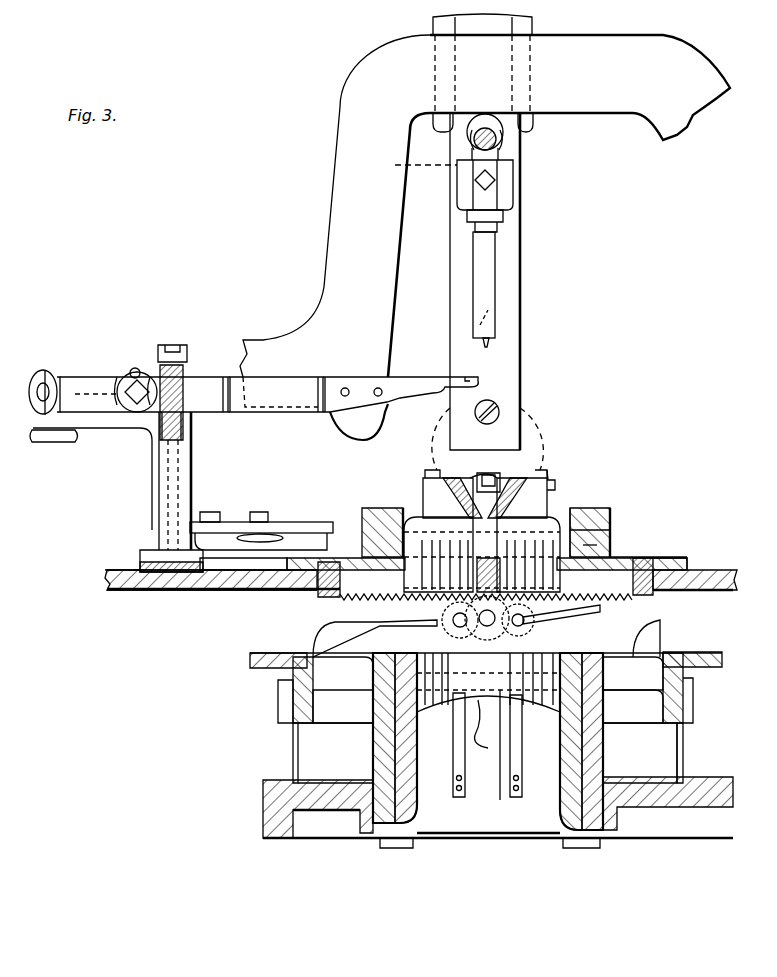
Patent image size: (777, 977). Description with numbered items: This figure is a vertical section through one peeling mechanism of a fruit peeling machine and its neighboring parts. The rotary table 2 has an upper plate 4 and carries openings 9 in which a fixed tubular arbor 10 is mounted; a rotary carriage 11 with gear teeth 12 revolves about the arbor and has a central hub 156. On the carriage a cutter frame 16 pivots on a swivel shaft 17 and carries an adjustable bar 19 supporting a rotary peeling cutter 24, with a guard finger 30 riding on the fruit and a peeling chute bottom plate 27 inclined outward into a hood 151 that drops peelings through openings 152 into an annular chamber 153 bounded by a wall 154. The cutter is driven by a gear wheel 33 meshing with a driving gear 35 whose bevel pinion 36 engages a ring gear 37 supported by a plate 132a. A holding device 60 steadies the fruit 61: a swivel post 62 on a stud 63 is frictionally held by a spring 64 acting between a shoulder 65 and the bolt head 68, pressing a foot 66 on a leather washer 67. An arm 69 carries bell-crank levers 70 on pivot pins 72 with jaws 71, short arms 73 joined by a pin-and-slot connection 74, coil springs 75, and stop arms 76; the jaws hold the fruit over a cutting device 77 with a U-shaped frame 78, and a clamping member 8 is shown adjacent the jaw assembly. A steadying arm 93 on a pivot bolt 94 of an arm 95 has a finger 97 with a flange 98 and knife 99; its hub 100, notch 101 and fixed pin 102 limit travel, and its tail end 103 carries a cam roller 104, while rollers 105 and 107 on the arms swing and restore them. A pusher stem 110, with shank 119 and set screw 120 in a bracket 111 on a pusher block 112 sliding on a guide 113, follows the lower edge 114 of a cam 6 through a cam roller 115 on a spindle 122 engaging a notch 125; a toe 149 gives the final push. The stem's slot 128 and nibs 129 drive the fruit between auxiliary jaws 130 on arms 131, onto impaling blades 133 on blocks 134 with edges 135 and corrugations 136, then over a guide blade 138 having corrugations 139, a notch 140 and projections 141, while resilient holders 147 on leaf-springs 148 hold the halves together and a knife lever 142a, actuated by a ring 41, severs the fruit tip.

The rotary table 2 is at (110, 586).
The upper plate 4 is at (138, 590).
The cam 6 is at (377, 64).
The clamping member 8 is at (559, 485).
The openings 9 is at (553, 815).
The tubular arbor 10 is at (562, 772).
The rotary carriage 11 is at (675, 655).
The gear teeth 12 is at (695, 695).
The cutter frame 16 is at (600, 625).
The swivel shaft 17 is at (607, 700).
The adjustable bar 19 is at (612, 558).
The rotary peeling cutter 24 is at (442, 608).
The bottom plate 27 is at (640, 612).
The guard finger 30 is at (590, 552).
The gear wheel 33 is at (600, 596).
The driving gear 35 is at (582, 532).
The bevel pinion 36 is at (335, 753).
The ring gear 37 is at (648, 565).
The ring 41 is at (722, 660).
The holding device 60 is at (294, 420).
The fruit 61 is at (540, 420).
The swivel post 62 is at (158, 488).
The central stud 63 is at (166, 500).
The spring 64 is at (190, 378).
The shoulder 65 is at (190, 447).
The foot 66 is at (142, 558).
The washer 67 is at (108, 576).
The head 68 is at (180, 350).
The arm 69 is at (300, 545).
The levers 70 is at (553, 473).
The jaws 71 is at (494, 458).
The pivot pins 72 is at (555, 480).
The short arms 73 is at (488, 473).
The pin-and-slot connection 74 is at (425, 512).
The coil spring 75 is at (578, 506).
The stop arms 76 is at (578, 510).
The cutting device 77 is at (612, 512).
The U-shaped frame 78 is at (612, 520).
The steadying arm 93 is at (277, 388).
The pivot bolt 94 is at (133, 406).
The arm 95 is at (96, 430).
The finger 97 is at (422, 396).
The horizontal flange 98 is at (466, 376).
The vertical knife 99 is at (481, 385).
The hub 100 is at (152, 372).
The notch 101 is at (126, 374).
The fixed pin 102 is at (136, 368).
The tail end 103 is at (70, 380).
The cam roller 104 is at (45, 372).
The cam roller 105 is at (240, 520).
The restoring roller 107 is at (36, 442).
The pusher stem 110 is at (487, 283).
The bracket 111 is at (517, 183).
The pusher block 112 is at (540, 28).
The guide 113 is at (522, 223).
The lower edge 114 is at (591, 114).
The cam roller 115 is at (487, 115).
The shank 119 is at (407, 164).
The set screw 120 is at (475, 185).
The spindle 122 is at (497, 132).
The notch 125 is at (507, 130).
The vertical slot 128 is at (483, 325).
The nibs 129 is at (487, 344).
The auxiliary jaws 130 is at (435, 578).
The arm 131 is at (282, 530).
The plate 132a is at (692, 578).
The impaling blades 133 is at (640, 528).
The blocks 134 is at (655, 520).
The edges 135 is at (595, 490).
The vertical corrugations 136 is at (330, 588).
The guide blade 138 is at (487, 645).
The vertical corrugations 139 is at (538, 706).
The notch 140 is at (480, 714).
The projections 141 is at (660, 665).
The knife lever 142a is at (505, 752).
The resilient holders 147 is at (458, 722).
The leaf-springs 148 is at (514, 798).
The toe 149 is at (368, 441).
The hoods 151 is at (648, 622).
The openings 152 is at (683, 716).
The annular chamber 153 is at (663, 740).
The annular wall 154 is at (683, 760).
The hub 156 is at (375, 752).